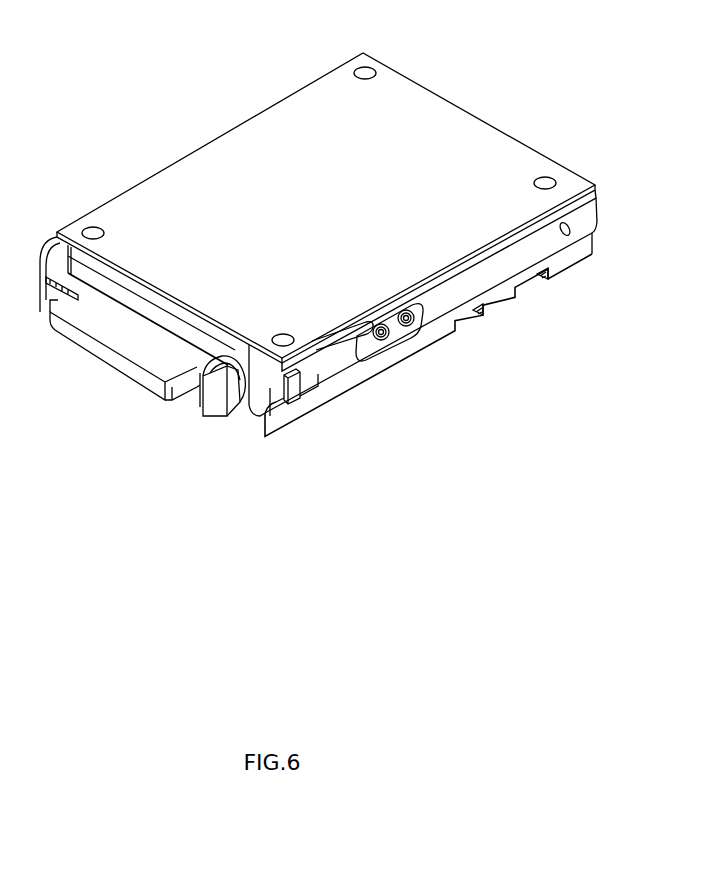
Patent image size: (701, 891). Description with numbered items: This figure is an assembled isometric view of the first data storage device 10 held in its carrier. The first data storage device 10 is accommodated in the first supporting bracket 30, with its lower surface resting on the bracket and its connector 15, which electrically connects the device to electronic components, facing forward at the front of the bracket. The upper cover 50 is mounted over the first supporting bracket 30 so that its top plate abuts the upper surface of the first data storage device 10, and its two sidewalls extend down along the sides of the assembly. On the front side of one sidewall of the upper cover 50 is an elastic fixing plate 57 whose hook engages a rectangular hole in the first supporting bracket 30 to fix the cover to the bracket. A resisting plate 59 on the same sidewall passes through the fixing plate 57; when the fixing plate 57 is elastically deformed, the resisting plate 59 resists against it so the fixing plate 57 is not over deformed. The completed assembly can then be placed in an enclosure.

The upper cover 50 is at (440, 117).
The first supporting bracket 30 is at (412, 348).
The fixing plate 57 is at (318, 372).
The resisting plate 59 is at (290, 405).
The first data storage device 10 is at (232, 352).
The connector 15 is at (152, 350).